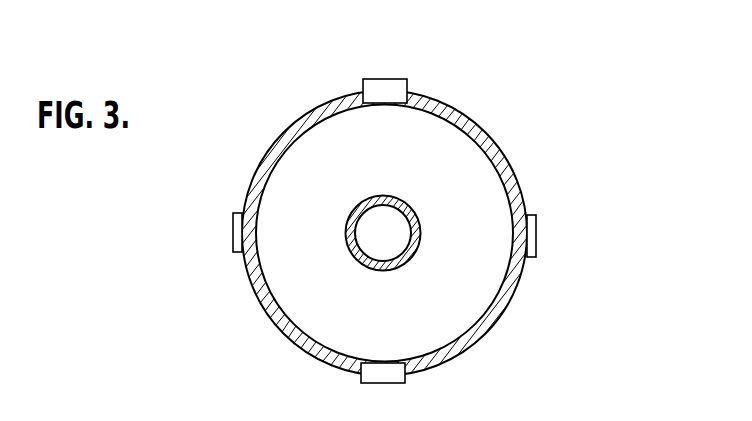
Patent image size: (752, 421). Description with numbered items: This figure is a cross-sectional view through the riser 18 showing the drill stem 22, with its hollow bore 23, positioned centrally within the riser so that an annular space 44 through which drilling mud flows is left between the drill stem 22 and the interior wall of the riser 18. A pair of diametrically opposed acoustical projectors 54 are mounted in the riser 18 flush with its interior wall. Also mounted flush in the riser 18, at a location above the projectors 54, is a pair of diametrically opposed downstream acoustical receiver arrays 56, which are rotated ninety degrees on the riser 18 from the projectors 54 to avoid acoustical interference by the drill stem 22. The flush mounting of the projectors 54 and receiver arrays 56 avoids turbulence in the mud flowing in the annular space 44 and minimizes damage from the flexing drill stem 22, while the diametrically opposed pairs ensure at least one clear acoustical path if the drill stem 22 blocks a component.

The riser 18 is at (499, 142).
The drill stem 22 is at (409, 208).
The hollow bore 23 is at (396, 242).
The annular space 44 is at (454, 298).
The acoustical projectors 54 is at (233, 231).
The downstream acoustical receiver arrays 56 is at (367, 79).